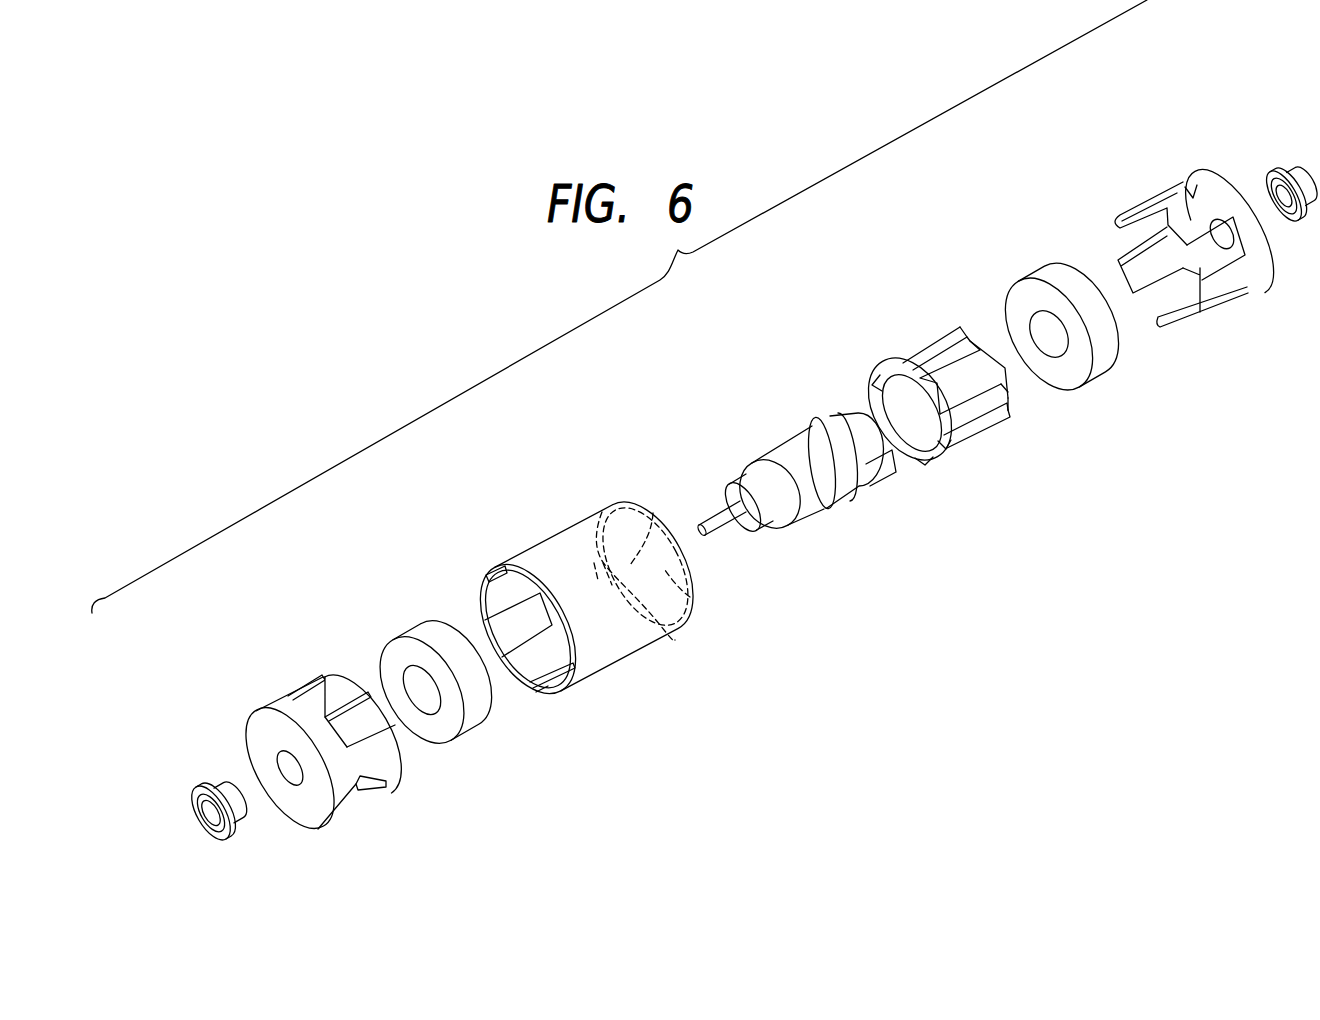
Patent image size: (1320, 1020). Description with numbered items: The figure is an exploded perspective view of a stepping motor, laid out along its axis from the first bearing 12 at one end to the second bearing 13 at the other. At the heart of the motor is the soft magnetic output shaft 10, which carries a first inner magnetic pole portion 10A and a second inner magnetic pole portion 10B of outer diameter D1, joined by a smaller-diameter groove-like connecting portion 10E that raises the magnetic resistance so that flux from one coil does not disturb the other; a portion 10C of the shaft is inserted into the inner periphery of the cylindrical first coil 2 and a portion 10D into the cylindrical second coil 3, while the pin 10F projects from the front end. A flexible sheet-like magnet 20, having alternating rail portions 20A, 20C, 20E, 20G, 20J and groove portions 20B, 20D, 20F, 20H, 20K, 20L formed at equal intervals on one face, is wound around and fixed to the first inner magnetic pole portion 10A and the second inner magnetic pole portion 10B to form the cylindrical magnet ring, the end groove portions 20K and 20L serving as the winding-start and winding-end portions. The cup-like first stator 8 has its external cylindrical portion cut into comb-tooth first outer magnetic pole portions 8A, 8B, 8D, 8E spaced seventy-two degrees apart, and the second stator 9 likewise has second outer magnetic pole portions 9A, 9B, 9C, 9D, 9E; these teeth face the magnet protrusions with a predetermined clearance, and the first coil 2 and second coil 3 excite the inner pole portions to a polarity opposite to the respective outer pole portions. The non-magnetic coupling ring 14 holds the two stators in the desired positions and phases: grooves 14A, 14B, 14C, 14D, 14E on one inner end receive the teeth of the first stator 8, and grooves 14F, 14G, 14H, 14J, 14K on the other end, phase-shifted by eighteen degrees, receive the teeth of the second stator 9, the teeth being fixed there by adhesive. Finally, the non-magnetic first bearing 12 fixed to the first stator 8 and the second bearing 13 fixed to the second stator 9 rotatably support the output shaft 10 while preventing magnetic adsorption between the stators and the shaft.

The first coil 2 is at (403, 642).
The second coil 3 is at (1035, 280).
The first stator 8 is at (326, 718).
The first outer magnetic pole portion 8A is at (341, 675).
The first outer magnetic pole portion 8B is at (307, 692).
The first outer magnetic pole portion 8D is at (377, 790).
The first outer magnetic pole portion 8E is at (383, 753).
The second stator 9 is at (1165, 237).
The second outer magnetic pole portion 9A is at (1197, 207).
The second outer magnetic pole portion 9B is at (1144, 204).
The second outer magnetic pole portion 9C is at (1118, 261).
The second outer magnetic pole portion 9D is at (1180, 315).
The second outer magnetic pole portion 9E is at (1215, 288).
The output shaft 10 is at (773, 453).
The first inner magnetic pole portion 10A is at (770, 472).
The second inner magnetic pole portion 10B is at (818, 434).
The portion of the output shaft 10C is at (743, 485).
The portion of the output shaft 10D is at (858, 425).
The connecting portion 10E is at (790, 452).
The pin 10F is at (720, 513).
The first bearing 12 is at (209, 788).
The second bearing 13 is at (1290, 165).
The coupling ring 14 is at (587, 600).
The groove 14A is at (528, 629).
The groove 14B is at (488, 578).
The groove 14C is at (497, 630).
The groove 14D is at (545, 680).
The groove 14E is at (576, 660).
The groove 14F is at (653, 513).
The groove 14G is at (603, 563).
The groove 14H is at (594, 563).
The groove 14J is at (645, 566).
The groove 14K is at (690, 597).
The sheet-like magnet 20 is at (958, 385).
The rail portion 20A is at (917, 345).
The groove portion 20B is at (876, 386).
The rail portion 20C is at (885, 410).
The groove portion 20D is at (884, 432).
The rail portion 20E is at (920, 458).
The groove portion 20F is at (950, 460).
The rail portion 20G is at (1003, 426).
The groove portion 20H is at (1000, 395).
The rail portion 20J is at (988, 362).
The groove portion 20K is at (960, 327).
The groove portion 20L is at (950, 352).